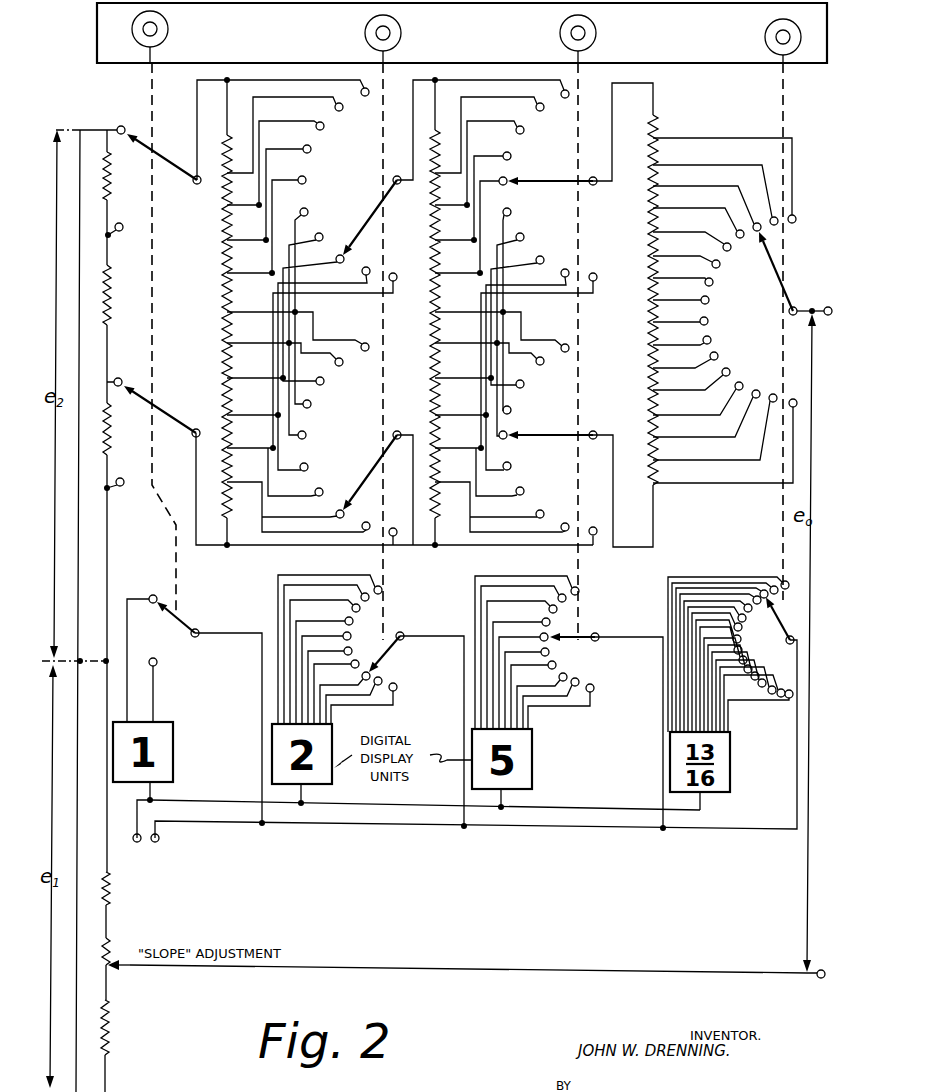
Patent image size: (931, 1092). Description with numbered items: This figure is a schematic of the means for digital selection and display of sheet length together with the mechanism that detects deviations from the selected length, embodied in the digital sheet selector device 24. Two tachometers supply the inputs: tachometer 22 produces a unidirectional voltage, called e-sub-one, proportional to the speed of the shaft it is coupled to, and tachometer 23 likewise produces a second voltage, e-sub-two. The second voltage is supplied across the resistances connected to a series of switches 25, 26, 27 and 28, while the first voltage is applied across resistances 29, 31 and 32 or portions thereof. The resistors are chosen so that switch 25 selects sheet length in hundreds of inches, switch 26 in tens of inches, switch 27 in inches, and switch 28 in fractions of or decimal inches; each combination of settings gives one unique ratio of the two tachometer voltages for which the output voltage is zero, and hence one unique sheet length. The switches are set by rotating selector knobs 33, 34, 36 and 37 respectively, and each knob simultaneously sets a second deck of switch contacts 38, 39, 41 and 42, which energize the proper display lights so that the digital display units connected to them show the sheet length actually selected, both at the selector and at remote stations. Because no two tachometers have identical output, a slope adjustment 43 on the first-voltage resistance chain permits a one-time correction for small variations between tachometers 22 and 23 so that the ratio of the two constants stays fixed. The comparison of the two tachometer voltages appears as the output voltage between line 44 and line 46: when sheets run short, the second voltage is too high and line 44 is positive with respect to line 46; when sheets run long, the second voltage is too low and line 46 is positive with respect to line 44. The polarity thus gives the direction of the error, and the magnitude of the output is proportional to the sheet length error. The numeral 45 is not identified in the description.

The tachometer 22 is at (83, 876).
The tachometer 23 is at (133, 393).
The digital sheet selector device 24 is at (527, 830).
The switch 25 is at (192, 328).
The switch 26 is at (366, 330).
The switch 27 is at (559, 330).
The switch 28 is at (762, 330).
The resistance 29 is at (112, 893).
The resistance 31 is at (112, 946).
The resistance 32 is at (112, 1030).
The selector knob 33 is at (168, 29).
The selector knob 34 is at (401, 35).
The selector knob 36 is at (596, 33).
The selector knob 37 is at (801, 40).
The switch contacts 38 is at (176, 650).
The switch contacts 39 is at (372, 642).
The switch contacts 41 is at (598, 664).
The switch contacts 42 is at (778, 668).
The slope adjustment 43 is at (120, 968).
The line 44 is at (797, 306).
The output conductor 45 is at (668, 973).
The line 46 is at (793, 638).